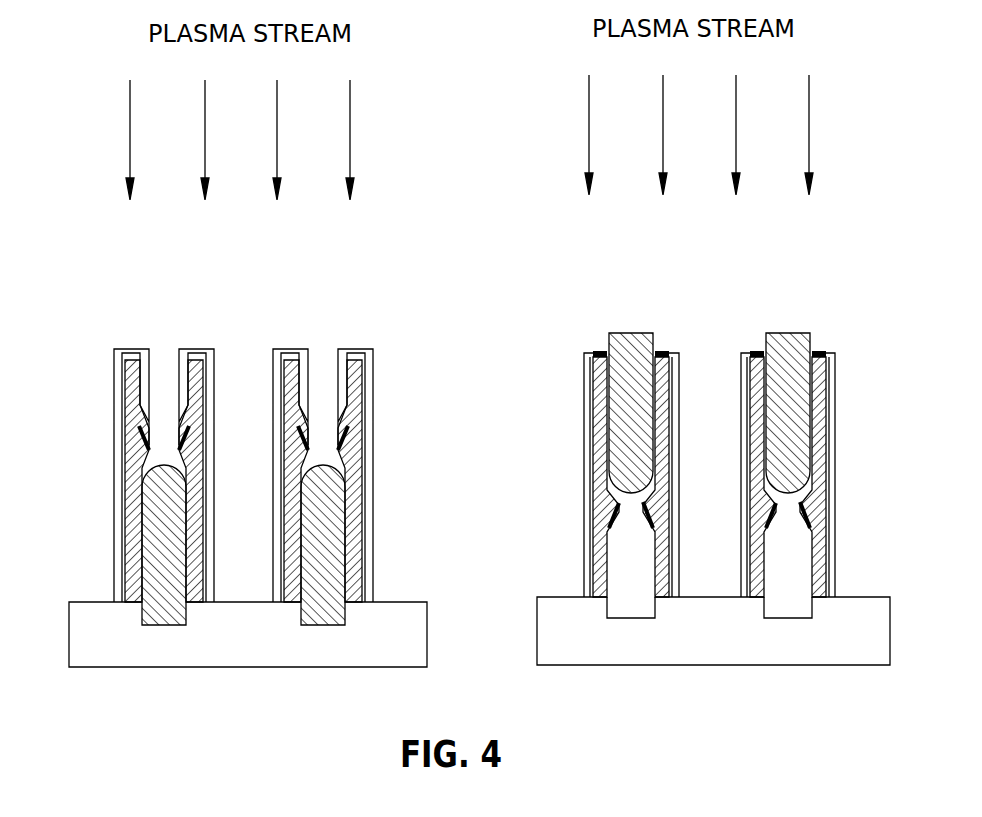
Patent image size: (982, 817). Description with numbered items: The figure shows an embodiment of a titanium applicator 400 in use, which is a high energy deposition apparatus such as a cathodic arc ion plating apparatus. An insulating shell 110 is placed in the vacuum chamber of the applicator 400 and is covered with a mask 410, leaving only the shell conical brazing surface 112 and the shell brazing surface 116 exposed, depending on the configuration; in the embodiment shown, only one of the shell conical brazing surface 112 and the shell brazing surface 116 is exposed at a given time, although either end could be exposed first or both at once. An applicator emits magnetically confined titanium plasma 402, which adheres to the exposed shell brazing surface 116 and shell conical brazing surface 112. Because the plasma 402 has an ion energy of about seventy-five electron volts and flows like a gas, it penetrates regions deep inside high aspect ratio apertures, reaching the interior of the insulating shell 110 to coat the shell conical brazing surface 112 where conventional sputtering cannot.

The titanium applicator 400 is at (137, 280).
The magnetically confined titanium plasma 402 is at (400, 77).
The mask 410 is at (632, 382).
The insulating shell 110 is at (340, 437).
The shell conical brazing surface 112 is at (142, 438).
The shell brazing surface 116 is at (818, 350).